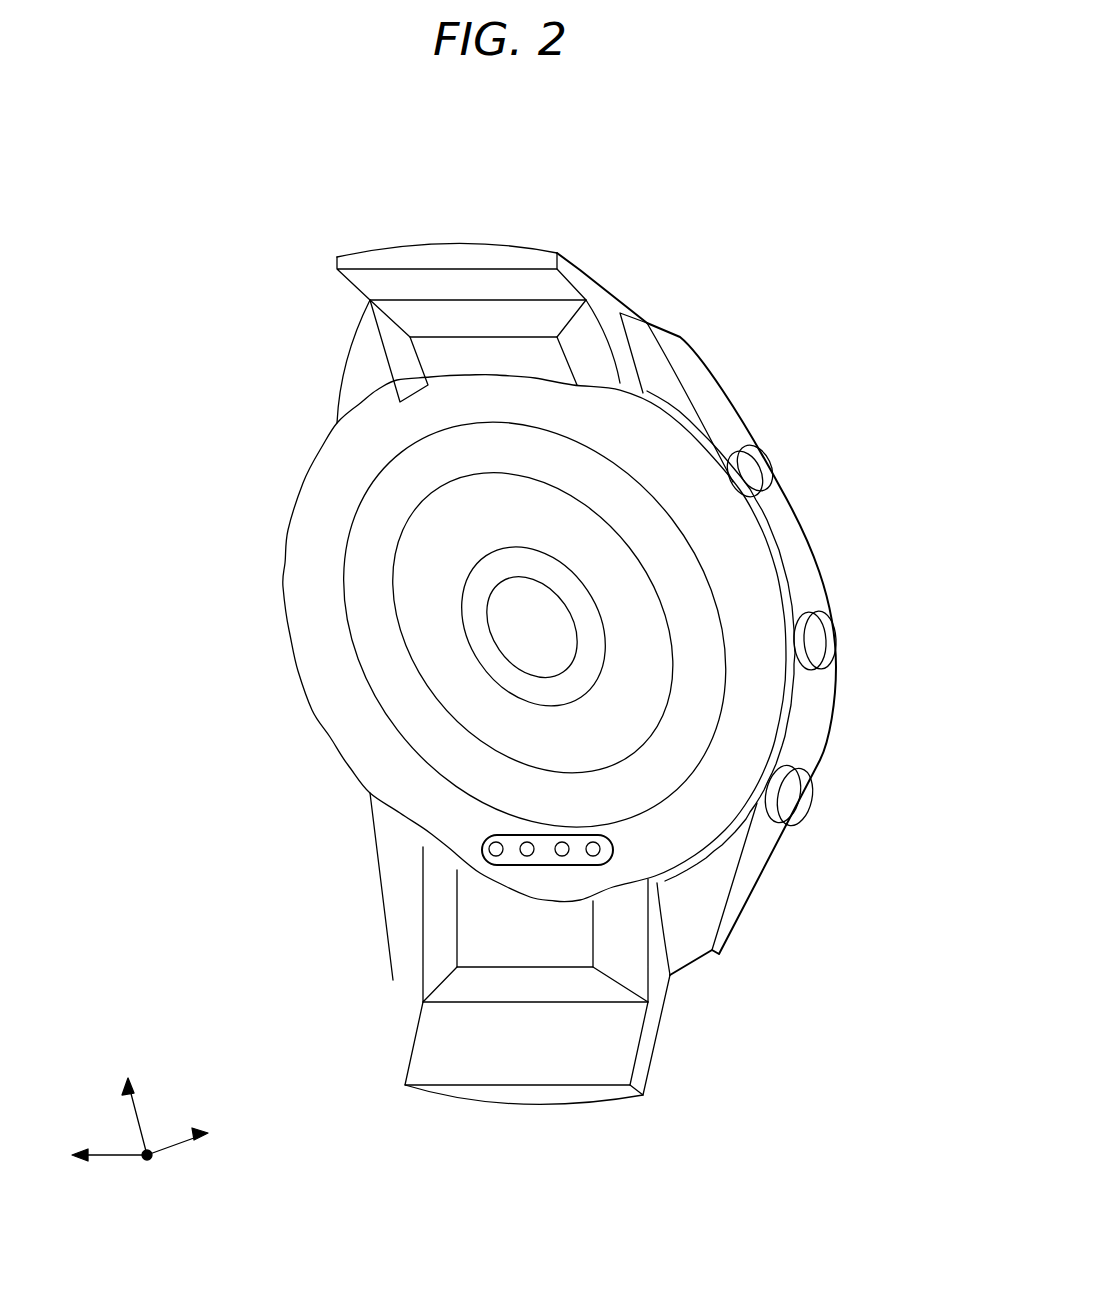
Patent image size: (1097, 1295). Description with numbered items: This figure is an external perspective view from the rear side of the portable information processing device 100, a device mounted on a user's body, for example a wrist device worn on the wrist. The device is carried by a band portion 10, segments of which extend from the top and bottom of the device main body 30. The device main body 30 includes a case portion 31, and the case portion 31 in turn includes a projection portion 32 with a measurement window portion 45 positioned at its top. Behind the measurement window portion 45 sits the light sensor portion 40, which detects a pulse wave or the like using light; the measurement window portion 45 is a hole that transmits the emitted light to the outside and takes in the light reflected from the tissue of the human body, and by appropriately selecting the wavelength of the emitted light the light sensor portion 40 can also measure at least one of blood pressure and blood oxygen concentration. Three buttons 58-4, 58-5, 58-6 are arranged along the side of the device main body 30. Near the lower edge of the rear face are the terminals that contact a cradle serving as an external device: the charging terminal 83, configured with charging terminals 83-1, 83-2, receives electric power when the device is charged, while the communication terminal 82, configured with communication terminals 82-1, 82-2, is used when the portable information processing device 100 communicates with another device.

The portable information processing device 100 is at (884, 178).
The band portion 10 is at (363, 263).
The device main body 30 is at (296, 496).
The case portion 31 is at (355, 740).
The projection portion 32 is at (405, 561).
The measurement window portion 45 is at (508, 653).
The light sensor portion 40 is at (548, 620).
The button 58-4 is at (760, 467).
The button 58-5 is at (830, 646).
The button 58-6 is at (800, 797).
The charging terminal 83 is at (371, 899).
The charging terminal 83-1 is at (527, 849).
The charging terminal 83-2 is at (496, 849).
The communication terminal 82 is at (404, 926).
The communication terminal 82-1 is at (593, 849).
The communication terminal 82-2 is at (562, 849).